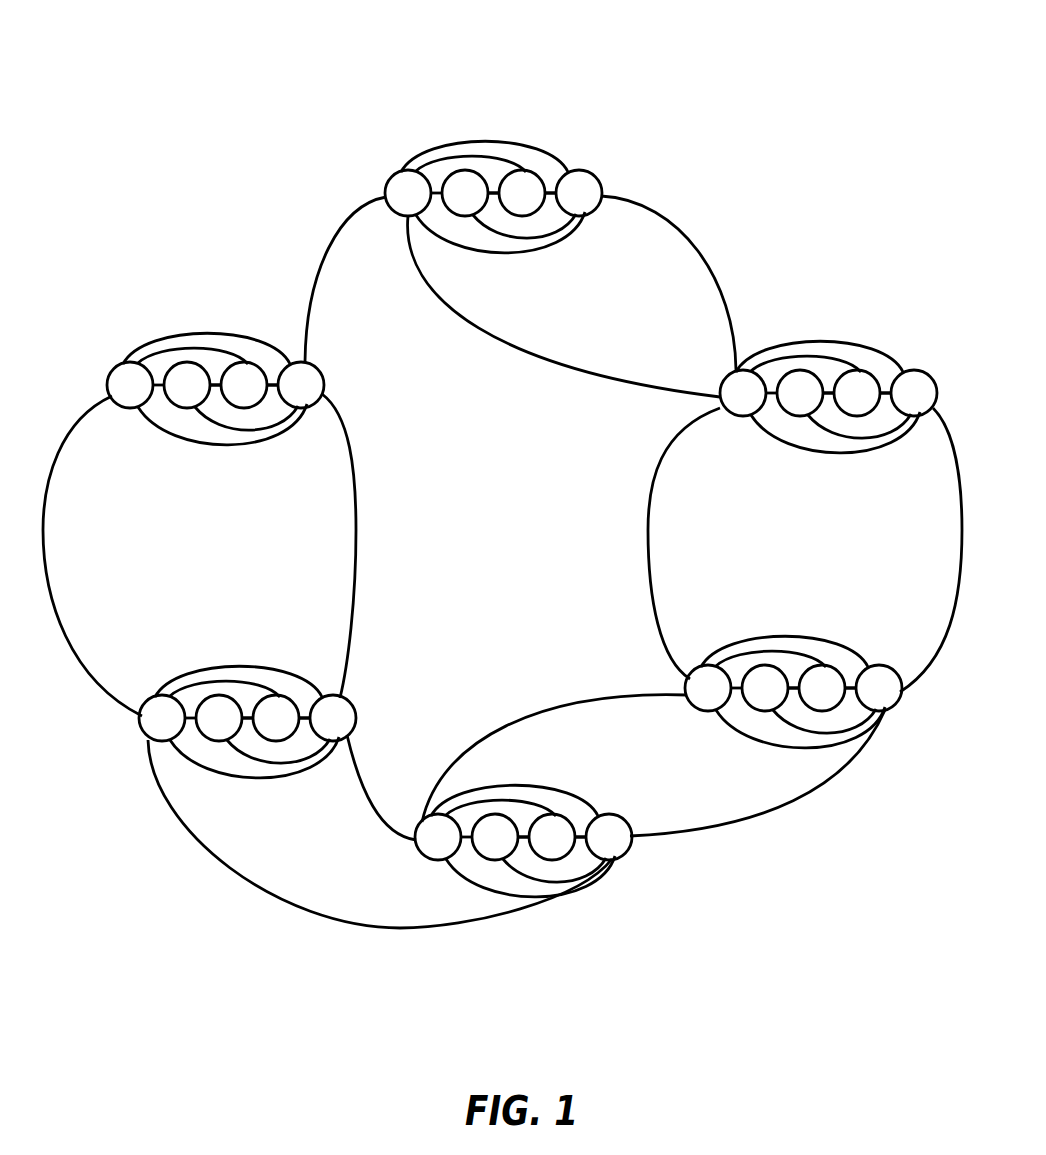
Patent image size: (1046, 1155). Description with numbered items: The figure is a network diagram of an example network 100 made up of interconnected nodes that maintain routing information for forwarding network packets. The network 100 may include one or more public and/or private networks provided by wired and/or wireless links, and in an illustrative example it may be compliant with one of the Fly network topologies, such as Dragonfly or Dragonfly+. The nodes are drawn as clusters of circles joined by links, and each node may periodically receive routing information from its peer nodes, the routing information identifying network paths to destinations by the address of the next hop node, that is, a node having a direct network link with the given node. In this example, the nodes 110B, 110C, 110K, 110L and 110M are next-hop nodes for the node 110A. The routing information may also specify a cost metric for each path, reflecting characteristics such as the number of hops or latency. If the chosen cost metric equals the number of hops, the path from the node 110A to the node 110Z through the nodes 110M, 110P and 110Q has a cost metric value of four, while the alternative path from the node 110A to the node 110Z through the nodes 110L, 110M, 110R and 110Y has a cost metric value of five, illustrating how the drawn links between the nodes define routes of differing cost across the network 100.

The network 100 is at (760, 61).
The node 110A is at (378, 172).
The node 110B is at (497, 234).
The node 110C is at (546, 132).
The node 110L is at (614, 165).
The node 110K is at (326, 363).
The node 110M is at (710, 376).
The node 110R is at (892, 351).
The node 110P is at (633, 651).
The node 110Y is at (868, 626).
The node 110Q is at (424, 756).
The node 110Z is at (586, 795).